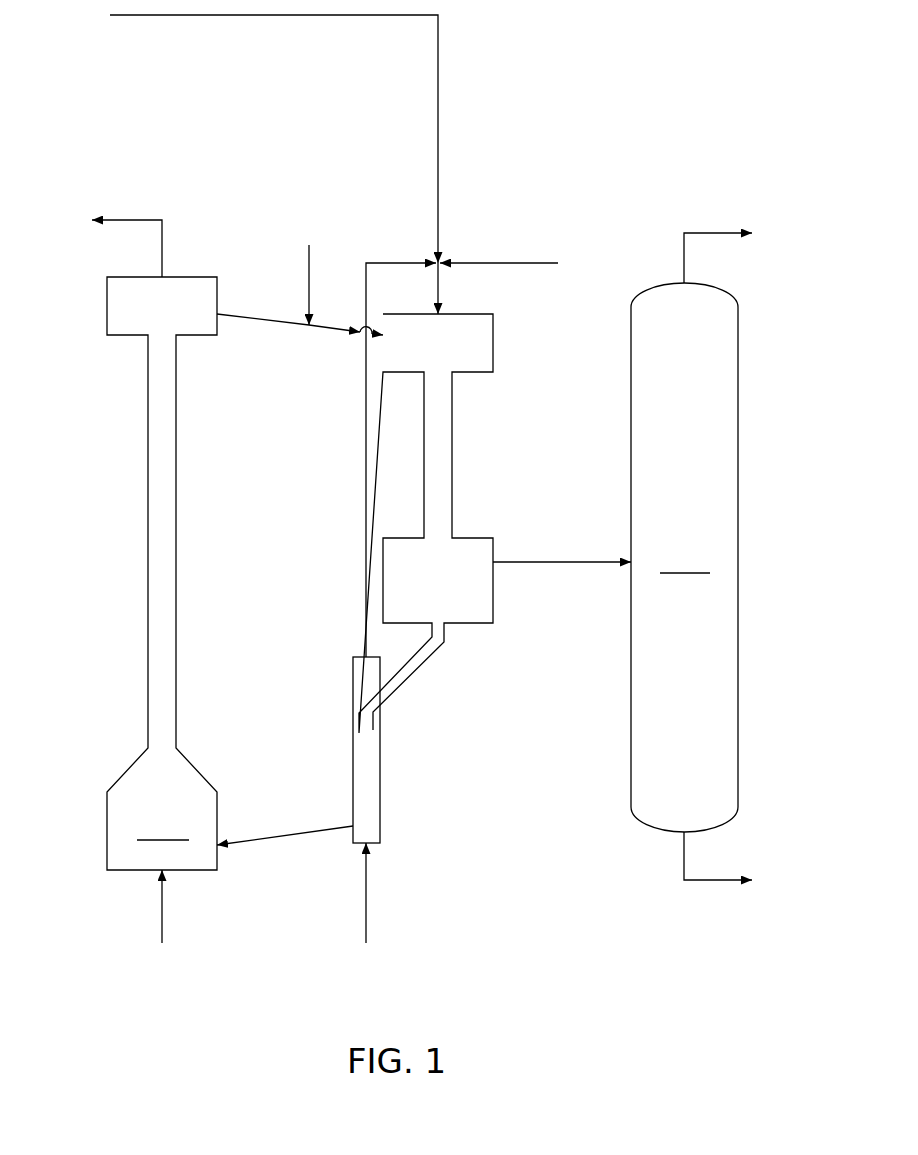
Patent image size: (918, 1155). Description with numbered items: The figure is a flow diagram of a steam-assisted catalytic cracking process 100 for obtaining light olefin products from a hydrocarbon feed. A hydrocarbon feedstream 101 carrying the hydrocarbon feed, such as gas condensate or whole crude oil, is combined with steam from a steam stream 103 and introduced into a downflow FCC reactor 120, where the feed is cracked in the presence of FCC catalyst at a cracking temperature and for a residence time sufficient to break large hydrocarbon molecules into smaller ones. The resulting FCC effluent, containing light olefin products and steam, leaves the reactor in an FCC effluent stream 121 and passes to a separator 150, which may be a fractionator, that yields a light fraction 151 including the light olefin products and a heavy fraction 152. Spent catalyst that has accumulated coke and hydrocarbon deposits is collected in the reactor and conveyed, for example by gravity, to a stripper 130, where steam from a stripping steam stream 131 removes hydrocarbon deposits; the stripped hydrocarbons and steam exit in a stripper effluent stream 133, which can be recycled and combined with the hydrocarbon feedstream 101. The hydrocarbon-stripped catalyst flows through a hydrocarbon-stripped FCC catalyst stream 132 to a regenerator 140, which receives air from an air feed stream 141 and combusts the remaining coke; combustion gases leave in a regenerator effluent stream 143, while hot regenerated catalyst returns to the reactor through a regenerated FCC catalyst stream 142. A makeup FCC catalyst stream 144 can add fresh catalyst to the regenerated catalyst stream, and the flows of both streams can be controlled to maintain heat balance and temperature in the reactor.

The steam-assisted catalytic cracking process 100 is at (620, 70).
The hydrocarbon feedstream 101 is at (215, 15).
The steam stream 103 is at (488, 263).
The downflow FCC reactor 120 is at (453, 422).
The FCC effluent stream 121 is at (525, 562).
The stripper 130 is at (380, 768).
The stripping steam stream 131 is at (366, 902).
The hydrocarbon-stripped FCC catalyst stream 132 is at (327, 826).
The stripper effluent stream 133 is at (366, 497).
The regenerator 140 is at (162, 573).
The air feed stream 141 is at (162, 912).
The regenerated FCC catalyst stream 142 is at (280, 326).
The regenerator effluent stream 143 is at (134, 220).
The makeup FCC catalyst stream 144 is at (309, 265).
The separator 150 is at (684, 557).
The light fraction 151 is at (710, 233).
The heavy fraction 152 is at (716, 880).